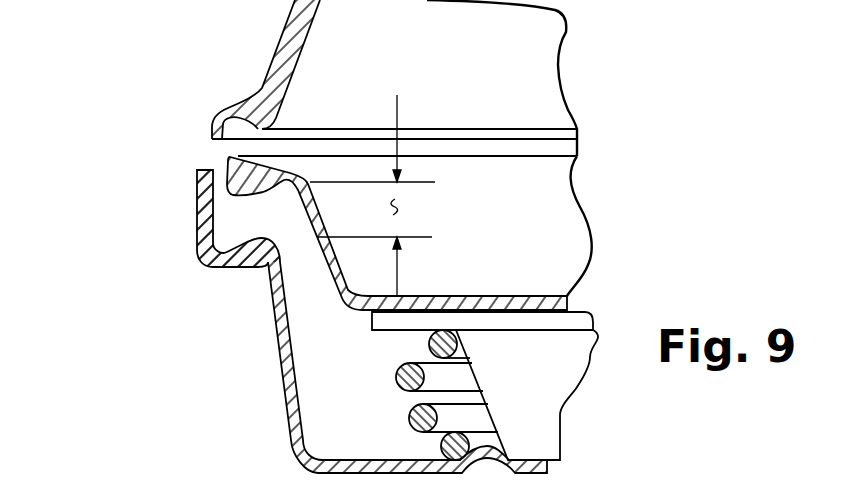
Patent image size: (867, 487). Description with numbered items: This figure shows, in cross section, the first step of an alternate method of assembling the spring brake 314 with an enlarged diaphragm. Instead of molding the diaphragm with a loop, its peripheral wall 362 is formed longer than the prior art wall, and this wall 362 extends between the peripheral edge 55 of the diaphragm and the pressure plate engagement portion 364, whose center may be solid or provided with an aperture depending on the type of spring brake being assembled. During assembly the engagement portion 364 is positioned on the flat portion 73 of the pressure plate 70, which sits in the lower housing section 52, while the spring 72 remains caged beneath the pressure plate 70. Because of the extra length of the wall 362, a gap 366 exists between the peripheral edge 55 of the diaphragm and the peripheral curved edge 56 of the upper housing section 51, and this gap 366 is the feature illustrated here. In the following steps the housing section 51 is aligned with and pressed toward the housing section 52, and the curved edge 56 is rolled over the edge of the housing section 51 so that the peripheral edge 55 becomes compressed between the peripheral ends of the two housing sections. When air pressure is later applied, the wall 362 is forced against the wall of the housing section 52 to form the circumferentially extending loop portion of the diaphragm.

The spring brake 314 is at (182, 105).
The housing section 51 is at (287, 33).
The housing section 52 is at (277, 370).
The peripheral edge 55 is at (232, 160).
The peripheral curved edge 56 is at (197, 200).
The peripheral wall 362 is at (335, 287).
The pressure plate engagement portion 364 is at (452, 290).
The gap 366 is at (400, 210).
The pressure plate 70 is at (548, 417).
The spring 72 is at (410, 413).
The flat portion 73 is at (482, 312).